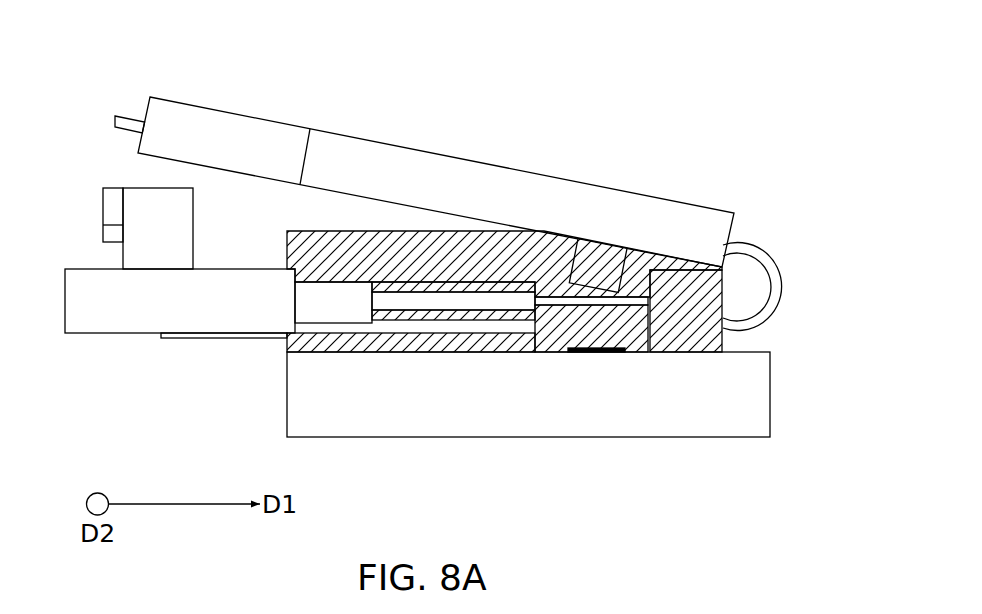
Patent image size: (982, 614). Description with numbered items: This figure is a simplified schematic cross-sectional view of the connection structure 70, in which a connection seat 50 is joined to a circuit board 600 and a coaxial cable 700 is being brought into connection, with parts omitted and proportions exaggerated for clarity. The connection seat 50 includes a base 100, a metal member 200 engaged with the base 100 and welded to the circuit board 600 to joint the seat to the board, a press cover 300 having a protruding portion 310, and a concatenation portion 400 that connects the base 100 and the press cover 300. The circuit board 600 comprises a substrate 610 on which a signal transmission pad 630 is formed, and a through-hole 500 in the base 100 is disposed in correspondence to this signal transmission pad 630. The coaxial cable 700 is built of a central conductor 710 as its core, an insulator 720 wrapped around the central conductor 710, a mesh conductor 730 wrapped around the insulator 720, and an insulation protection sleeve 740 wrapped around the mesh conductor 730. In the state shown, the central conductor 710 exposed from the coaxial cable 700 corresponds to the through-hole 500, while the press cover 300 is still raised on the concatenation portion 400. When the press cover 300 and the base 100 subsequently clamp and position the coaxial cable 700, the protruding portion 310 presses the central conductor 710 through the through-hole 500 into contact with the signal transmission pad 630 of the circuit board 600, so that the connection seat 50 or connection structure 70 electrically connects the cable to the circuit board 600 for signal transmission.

The connection structure 70 is at (126, 37).
The metal member 200 is at (153, 210).
The press cover 300 is at (508, 167).
The protruding portion 310 is at (598, 263).
The connection seat 50 is at (487, 214).
The concatenation portion 400 is at (768, 258).
The base 100 is at (722, 343).
The coaxial cable 700 is at (271, 381).
The insulation protection sleeve 740 is at (153, 302).
The mesh conductor 730 is at (308, 300).
The insulator 720 is at (393, 302).
The substrate 610 is at (437, 388).
The central conductor 710 is at (637, 303).
The through-hole 500 is at (573, 328).
The signal transmission pad 630 is at (595, 352).
The circuit board 600 is at (771, 415).